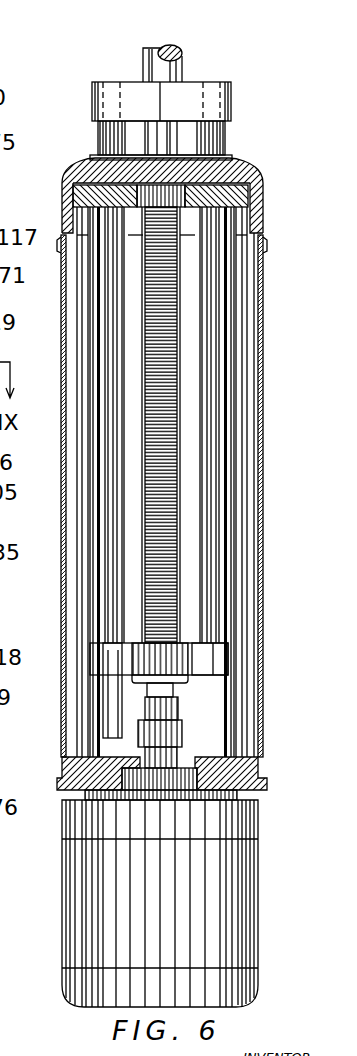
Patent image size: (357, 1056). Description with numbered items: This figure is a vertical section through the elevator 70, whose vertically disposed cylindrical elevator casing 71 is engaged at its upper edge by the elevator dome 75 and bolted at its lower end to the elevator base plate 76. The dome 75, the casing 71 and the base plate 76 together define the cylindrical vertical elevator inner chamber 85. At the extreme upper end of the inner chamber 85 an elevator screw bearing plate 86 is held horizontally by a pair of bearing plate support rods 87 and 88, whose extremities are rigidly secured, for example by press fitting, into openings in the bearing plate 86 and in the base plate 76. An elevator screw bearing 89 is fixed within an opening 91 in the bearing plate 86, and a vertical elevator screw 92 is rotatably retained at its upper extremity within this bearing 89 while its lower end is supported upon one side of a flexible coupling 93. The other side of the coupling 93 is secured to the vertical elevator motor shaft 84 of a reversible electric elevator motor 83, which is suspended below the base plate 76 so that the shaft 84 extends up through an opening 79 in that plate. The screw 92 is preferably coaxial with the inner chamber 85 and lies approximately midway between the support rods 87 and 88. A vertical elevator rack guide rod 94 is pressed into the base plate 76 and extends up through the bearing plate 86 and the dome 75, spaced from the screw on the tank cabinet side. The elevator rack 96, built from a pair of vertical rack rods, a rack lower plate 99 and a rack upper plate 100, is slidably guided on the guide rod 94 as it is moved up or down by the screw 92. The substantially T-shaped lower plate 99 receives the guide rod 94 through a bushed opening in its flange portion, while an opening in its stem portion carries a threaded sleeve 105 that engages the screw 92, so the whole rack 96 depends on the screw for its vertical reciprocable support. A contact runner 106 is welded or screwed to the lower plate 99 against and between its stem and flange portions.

The elevator 70 is at (279, 171).
The elevator casing 71 is at (263, 305).
The elevator dome 75 is at (255, 178).
The elevator base plate 76 is at (250, 783).
The opening 79 is at (178, 773).
The electric elevator motor 83 is at (78, 890).
The elevator motor shaft 84 is at (150, 777).
The elevator inner chamber 85 is at (250, 432).
The elevator screw bearing plate 86 is at (80, 195).
The bearing plate support rod 87 is at (90, 333).
The bearing plate support rod 88 is at (245, 258).
The elevator screw bearing 89 is at (145, 197).
The opening 91 is at (152, 193).
The elevator screw 92 is at (165, 385).
The flexible coupling 93 is at (163, 732).
The elevator rack guide rod 94 is at (178, 66).
The elevator rack 96 is at (252, 92).
The rack lower plate 99 is at (167, 653).
The rack upper plate 100 is at (133, 91).
The threaded sleeve 105 is at (187, 678).
The contact runner 106 is at (110, 703).